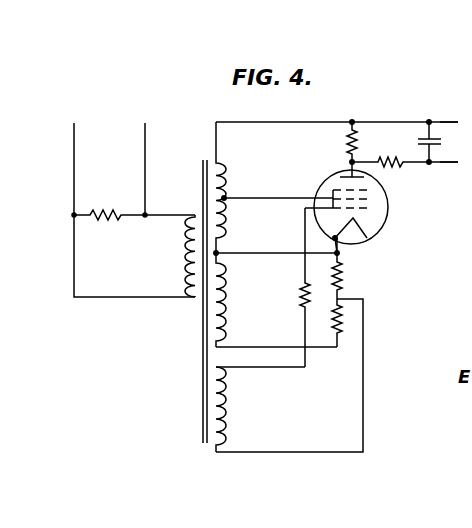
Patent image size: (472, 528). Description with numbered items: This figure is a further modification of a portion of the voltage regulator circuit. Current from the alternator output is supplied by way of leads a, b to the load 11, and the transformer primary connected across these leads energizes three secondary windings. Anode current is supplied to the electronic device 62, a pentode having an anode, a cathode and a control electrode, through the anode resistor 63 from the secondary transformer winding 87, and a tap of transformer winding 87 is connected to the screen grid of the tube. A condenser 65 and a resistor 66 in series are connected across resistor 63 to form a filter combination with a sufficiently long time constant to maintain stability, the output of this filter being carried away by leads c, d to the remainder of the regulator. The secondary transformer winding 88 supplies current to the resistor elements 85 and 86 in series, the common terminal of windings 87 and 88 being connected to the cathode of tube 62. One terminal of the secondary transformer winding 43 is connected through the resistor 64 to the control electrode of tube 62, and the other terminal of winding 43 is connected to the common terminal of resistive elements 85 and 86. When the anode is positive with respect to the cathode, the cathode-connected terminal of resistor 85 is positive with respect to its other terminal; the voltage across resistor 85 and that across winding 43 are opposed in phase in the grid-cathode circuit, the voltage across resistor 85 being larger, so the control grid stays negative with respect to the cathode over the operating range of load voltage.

The load 11 is at (118, 221).
The secondary transformer winding 43 is at (228, 415).
The electronic device 62 is at (382, 216).
The anode resistor 63 is at (345, 140).
The resistor 64 is at (302, 306).
The condenser 65 is at (441, 142).
The resistor 66 is at (405, 162).
The resistor element 85 is at (347, 278).
The resistor element 86 is at (347, 316).
The secondary transformer winding 87 is at (226, 189).
The secondary transformer winding 88 is at (228, 294).
The lead a is at (74, 187).
The lead b is at (145, 170).
The lead c is at (444, 122).
The lead d is at (455, 162).